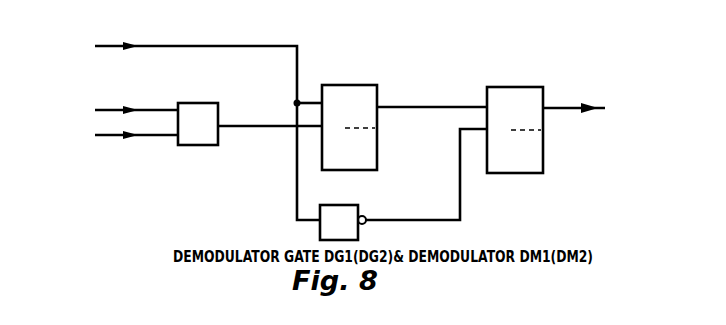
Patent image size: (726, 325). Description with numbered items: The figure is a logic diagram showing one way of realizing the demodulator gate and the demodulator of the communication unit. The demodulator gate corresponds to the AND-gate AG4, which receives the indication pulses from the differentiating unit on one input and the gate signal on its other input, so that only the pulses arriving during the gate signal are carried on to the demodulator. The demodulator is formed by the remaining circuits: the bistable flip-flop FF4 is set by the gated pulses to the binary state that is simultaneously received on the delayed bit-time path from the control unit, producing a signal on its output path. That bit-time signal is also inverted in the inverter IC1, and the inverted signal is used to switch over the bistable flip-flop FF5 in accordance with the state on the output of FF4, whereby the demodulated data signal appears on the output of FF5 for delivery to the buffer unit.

The AND-gate AG4 is at (195, 146).
The bistable flip-flop FF4 is at (338, 83).
The bistable flip-flop FF5 is at (504, 85).
The inverter IC1 is at (327, 204).